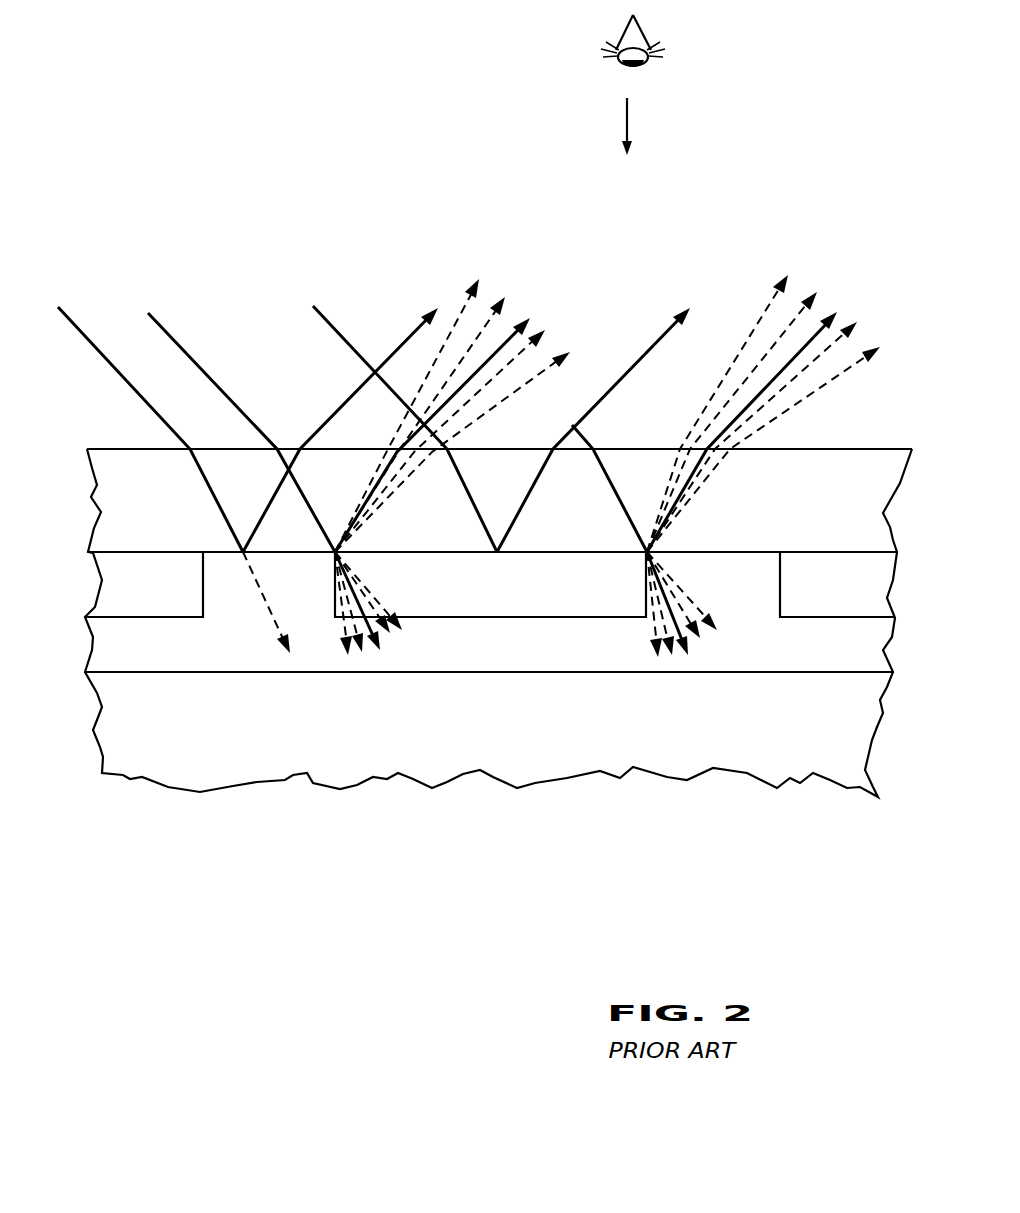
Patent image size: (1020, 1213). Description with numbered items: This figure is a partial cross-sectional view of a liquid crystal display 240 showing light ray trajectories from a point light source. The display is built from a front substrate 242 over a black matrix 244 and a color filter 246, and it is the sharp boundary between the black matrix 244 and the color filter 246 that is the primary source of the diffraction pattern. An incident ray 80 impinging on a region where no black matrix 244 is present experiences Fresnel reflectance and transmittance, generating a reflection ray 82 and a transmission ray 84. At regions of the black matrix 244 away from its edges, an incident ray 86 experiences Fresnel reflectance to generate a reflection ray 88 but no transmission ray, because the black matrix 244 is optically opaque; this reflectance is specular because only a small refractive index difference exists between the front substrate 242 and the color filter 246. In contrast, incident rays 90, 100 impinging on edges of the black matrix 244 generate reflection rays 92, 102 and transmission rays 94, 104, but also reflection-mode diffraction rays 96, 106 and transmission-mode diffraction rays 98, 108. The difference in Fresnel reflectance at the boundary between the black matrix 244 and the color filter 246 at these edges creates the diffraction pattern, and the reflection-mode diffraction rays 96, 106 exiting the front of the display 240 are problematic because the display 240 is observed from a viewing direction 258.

The viewing direction 258 is at (632, 117).
The liquid crystal display 240 is at (498, 690).
The front substrate 242 is at (828, 529).
The black matrix 244 is at (121, 602).
The color filter 246 is at (806, 662).
The incident ray 80 is at (70, 313).
The reflection ray 82 is at (330, 412).
The transmission ray 84 is at (263, 615).
The incident ray 86 is at (325, 312).
The reflection ray 88 is at (632, 368).
The incident ray 90 is at (177, 333).
The reflection ray 92 is at (530, 320).
The transmission ray 94 is at (388, 663).
The reflection-mode diffraction rays 96 is at (448, 318).
The transmission-mode diffraction rays 98 is at (340, 632).
The incident ray 100 is at (620, 505).
The reflection ray 102 is at (837, 312).
The transmission ray 104 is at (688, 657).
The reflection-mode diffraction rays 106 is at (757, 320).
The transmission-mode diffraction rays 108 is at (698, 612).